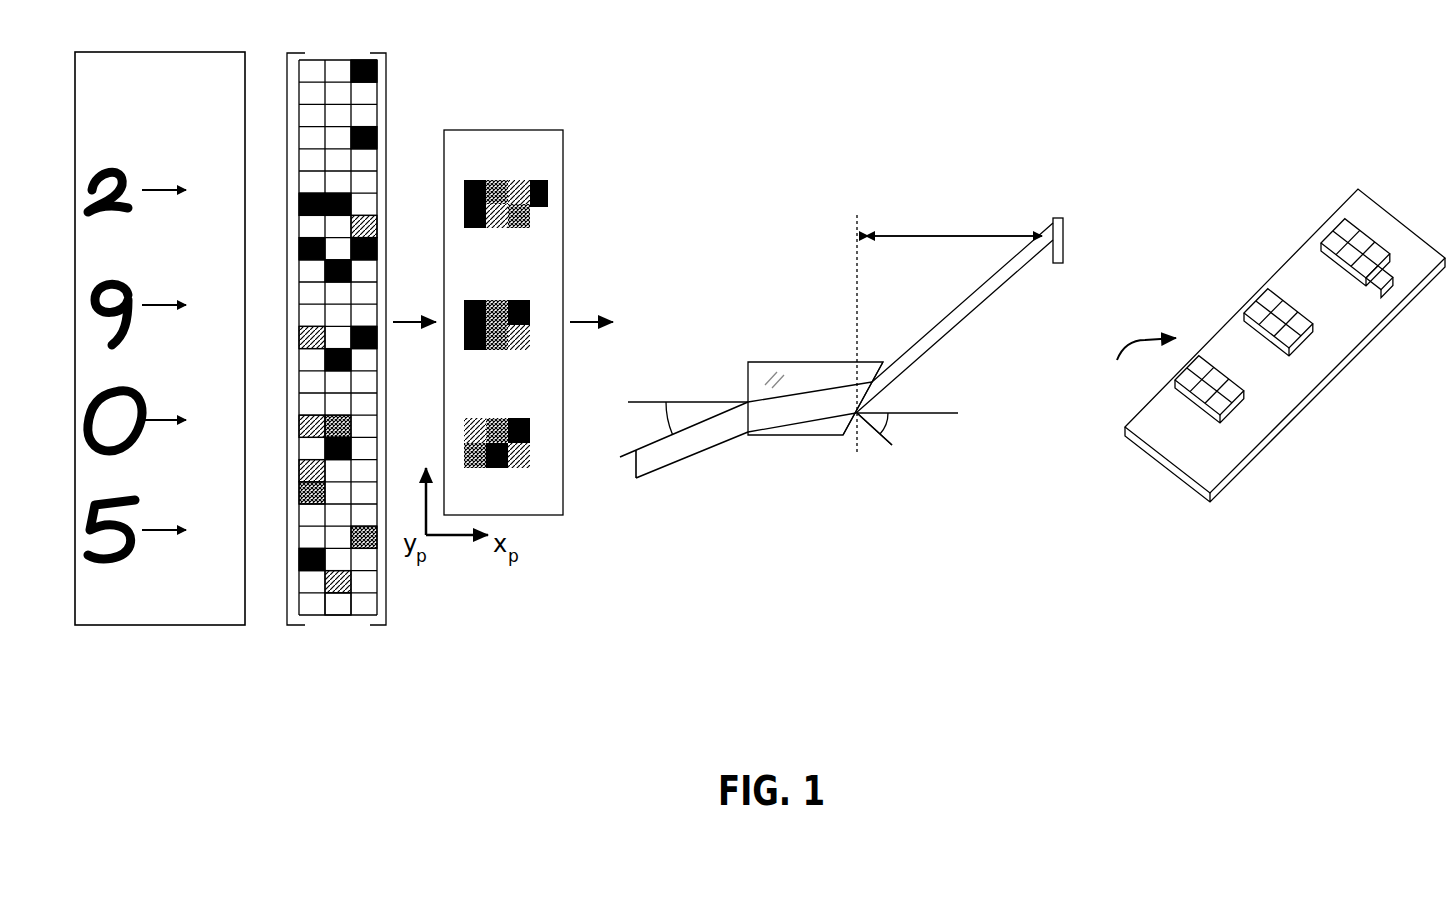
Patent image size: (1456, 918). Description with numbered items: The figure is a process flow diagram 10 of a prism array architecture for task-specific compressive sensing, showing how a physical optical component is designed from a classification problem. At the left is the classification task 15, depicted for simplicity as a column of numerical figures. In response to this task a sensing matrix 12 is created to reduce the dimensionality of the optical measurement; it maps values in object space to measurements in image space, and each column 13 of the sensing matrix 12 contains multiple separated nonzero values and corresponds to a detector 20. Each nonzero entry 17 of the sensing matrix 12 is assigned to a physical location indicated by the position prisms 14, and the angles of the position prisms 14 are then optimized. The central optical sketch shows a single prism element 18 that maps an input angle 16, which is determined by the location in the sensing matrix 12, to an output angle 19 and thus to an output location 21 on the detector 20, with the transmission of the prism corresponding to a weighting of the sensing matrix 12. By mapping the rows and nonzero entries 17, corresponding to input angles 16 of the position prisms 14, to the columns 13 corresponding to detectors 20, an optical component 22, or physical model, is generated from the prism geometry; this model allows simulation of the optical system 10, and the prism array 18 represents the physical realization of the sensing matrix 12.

The process flow diagram 10 is at (873, 160).
The sensing matrix 12 is at (370, 371).
The column 13 is at (338, 610).
The position prisms 14 is at (565, 222).
The classification task 15 is at (160, 52).
The input angle 16 is at (728, 402).
The nonzero entries 17 is at (367, 118).
The prism element 18 is at (866, 356).
The output angle 19 is at (874, 458).
The detector 20 is at (1058, 265).
The output location 21 is at (1139, 366).
The optical component 22 is at (1343, 203).